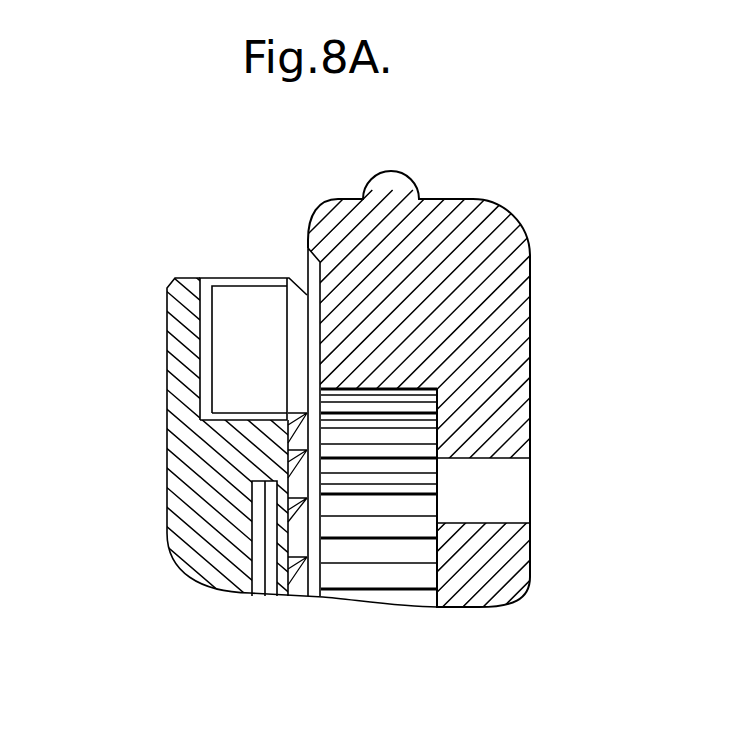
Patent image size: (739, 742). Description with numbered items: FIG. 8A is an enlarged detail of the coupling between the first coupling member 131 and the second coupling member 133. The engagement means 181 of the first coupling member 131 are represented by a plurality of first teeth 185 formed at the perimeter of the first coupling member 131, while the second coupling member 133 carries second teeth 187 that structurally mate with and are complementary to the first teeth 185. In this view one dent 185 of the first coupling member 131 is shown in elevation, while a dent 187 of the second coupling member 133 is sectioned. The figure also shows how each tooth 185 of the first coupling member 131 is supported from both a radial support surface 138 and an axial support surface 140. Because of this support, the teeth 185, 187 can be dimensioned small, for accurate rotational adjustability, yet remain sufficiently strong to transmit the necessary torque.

The first coupling member 131 is at (167, 504).
The second coupling member 133 is at (531, 281).
The radial support surface 138 is at (167, 320).
The axial support surface 140 is at (245, 437).
The engagement means 181 is at (299, 586).
The first teeth 185 is at (243, 320).
The second teeth 187 is at (360, 345).